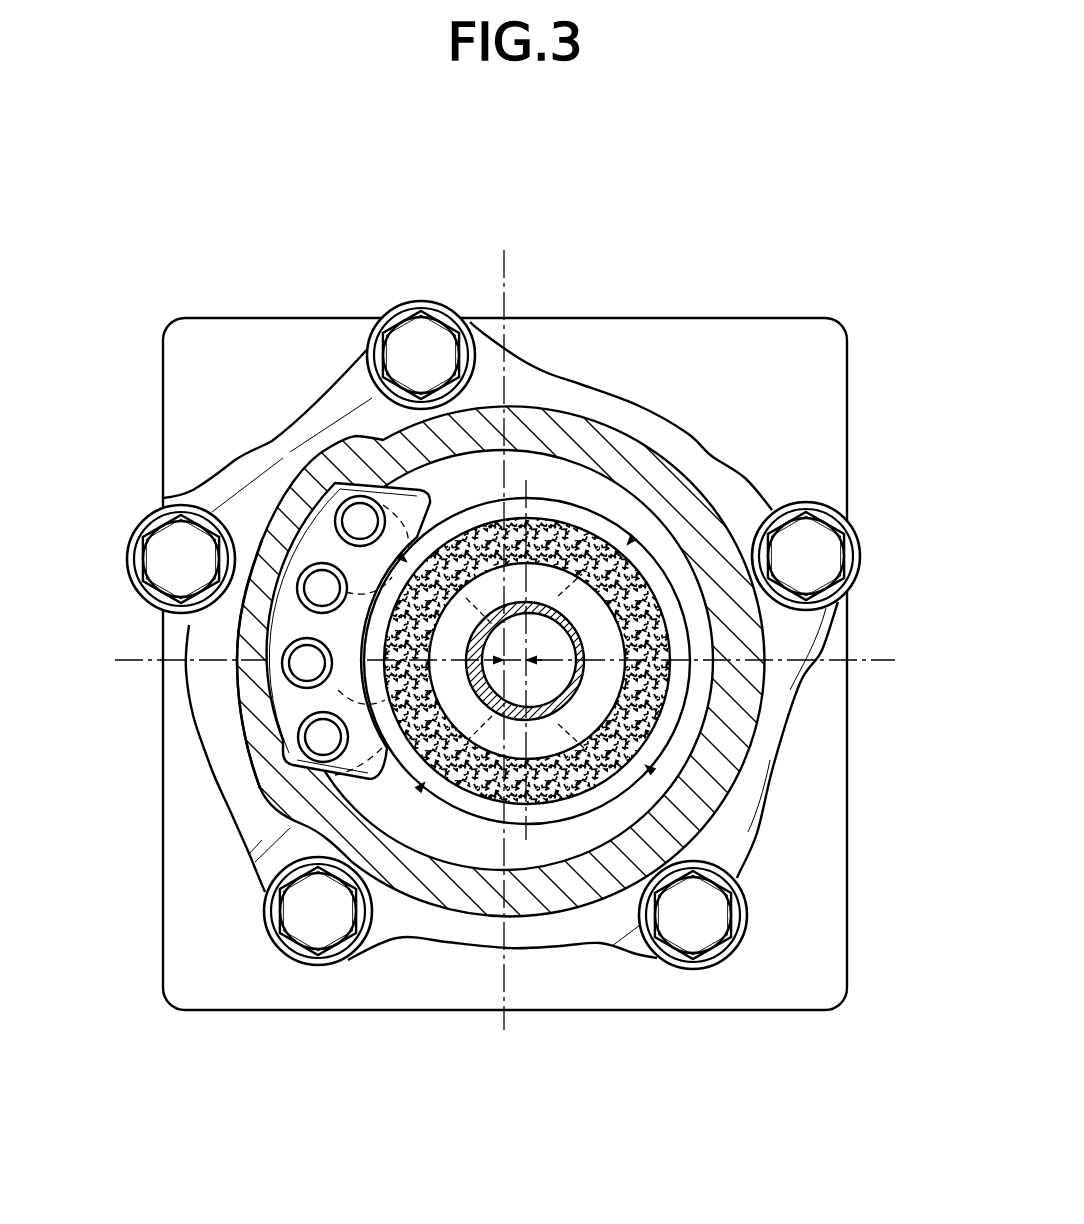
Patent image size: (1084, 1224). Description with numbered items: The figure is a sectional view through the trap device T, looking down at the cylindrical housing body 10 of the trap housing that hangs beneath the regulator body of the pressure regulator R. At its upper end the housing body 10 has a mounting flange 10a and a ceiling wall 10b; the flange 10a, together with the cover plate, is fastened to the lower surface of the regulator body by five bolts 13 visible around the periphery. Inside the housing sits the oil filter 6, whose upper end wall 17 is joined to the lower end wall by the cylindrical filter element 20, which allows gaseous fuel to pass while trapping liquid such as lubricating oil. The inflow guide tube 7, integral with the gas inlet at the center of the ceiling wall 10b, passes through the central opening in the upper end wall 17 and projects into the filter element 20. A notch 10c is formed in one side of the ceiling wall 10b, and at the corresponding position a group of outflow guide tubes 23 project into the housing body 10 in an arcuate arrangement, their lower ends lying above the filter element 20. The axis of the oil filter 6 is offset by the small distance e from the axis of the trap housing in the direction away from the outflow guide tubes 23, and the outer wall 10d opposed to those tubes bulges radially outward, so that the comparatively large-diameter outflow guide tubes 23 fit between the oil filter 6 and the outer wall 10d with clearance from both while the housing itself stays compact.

The pressure regulator R is at (718, 305).
The trap device T is at (700, 430).
The oil filter 6 is at (645, 566).
The inflow guide tube 7 is at (493, 713).
The housing body 10 is at (613, 452).
The mounting flange 10a is at (797, 628).
The ceiling wall 10b is at (548, 478).
The notch 10c is at (283, 668).
The outer wall 10d is at (250, 623).
The bolts 13 is at (410, 338).
The upper end wall 17 is at (687, 677).
The filter element 20 is at (657, 723).
The outflow guide tubes 23 is at (322, 585).
The offset distance e is at (496, 656).